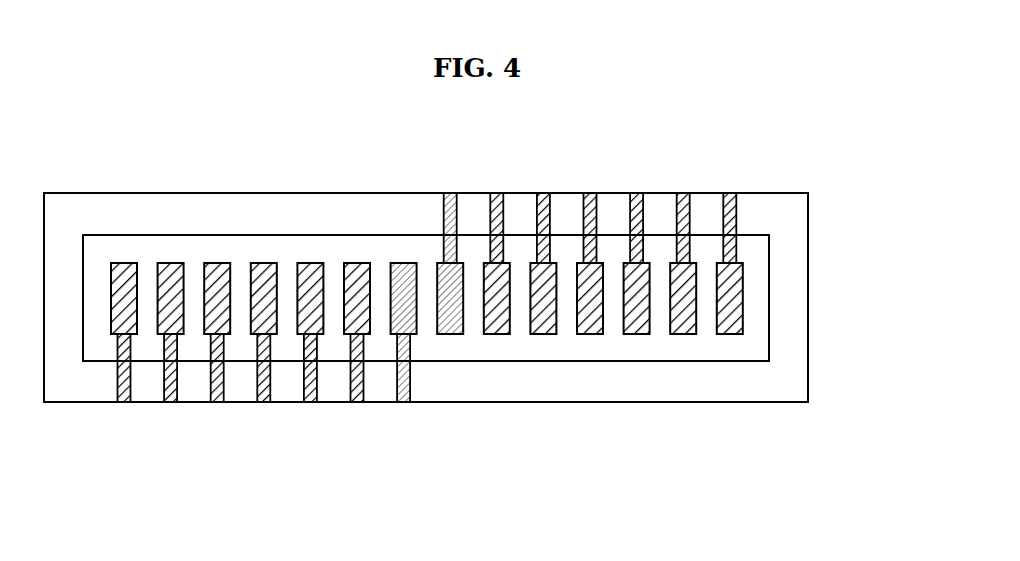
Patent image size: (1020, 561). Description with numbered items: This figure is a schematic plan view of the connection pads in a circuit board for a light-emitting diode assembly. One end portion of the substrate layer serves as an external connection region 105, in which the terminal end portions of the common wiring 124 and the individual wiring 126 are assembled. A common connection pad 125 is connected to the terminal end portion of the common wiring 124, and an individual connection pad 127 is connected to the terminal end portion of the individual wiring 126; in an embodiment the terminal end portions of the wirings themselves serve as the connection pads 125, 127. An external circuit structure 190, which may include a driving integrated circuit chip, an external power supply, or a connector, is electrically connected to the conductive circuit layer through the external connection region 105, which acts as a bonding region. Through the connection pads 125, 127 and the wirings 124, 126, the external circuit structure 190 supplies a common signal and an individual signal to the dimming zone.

The external connection region 105 is at (800, 288).
The common wiring 124 is at (453, 198).
The common connection pad 125 is at (448, 334).
The individual wiring 126 is at (306, 403).
The individual connection pad 127 is at (360, 268).
The external circuit structure 190 is at (553, 362).